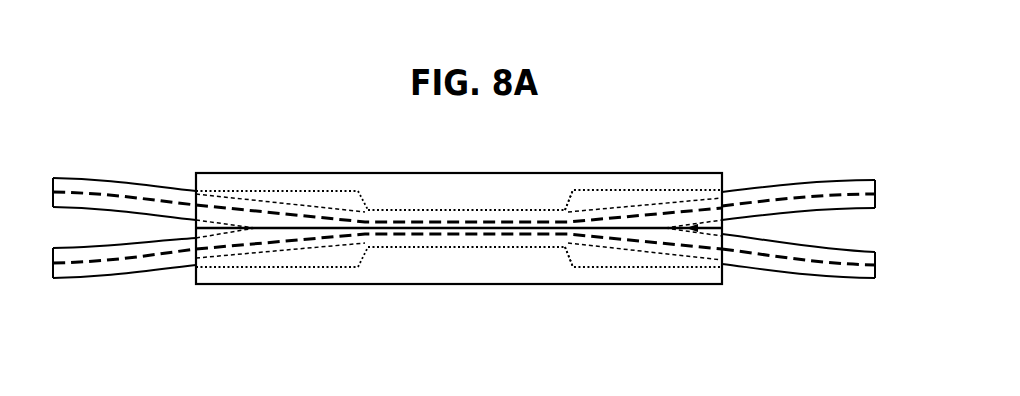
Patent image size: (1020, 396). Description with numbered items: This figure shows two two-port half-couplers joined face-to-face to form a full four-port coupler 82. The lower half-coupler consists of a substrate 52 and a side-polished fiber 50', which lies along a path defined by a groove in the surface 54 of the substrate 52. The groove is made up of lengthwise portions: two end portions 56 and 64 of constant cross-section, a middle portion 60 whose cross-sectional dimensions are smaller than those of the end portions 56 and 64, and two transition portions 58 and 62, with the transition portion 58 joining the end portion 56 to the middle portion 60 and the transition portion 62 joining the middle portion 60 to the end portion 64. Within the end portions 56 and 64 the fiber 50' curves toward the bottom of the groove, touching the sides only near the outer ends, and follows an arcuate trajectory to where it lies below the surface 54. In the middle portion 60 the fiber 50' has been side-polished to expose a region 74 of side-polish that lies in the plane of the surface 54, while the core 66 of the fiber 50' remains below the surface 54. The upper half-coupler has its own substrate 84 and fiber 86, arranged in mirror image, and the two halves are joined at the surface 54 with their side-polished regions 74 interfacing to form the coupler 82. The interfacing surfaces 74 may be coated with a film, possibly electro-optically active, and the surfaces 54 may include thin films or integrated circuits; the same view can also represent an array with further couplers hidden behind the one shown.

The full 4-port coupler 82 is at (345, 153).
The substrate 52 is at (533, 264).
The surface 54 is at (210, 229).
The end portion of groove 56 is at (273, 266).
The transition portion of groove 58 is at (359, 257).
The middle portion of groove 60 is at (437, 249).
The region of side-polish 74 is at (473, 226).
The substrate 84 is at (553, 186).
The end portion of groove 64 is at (637, 266).
The transition portion of groove 62 is at (568, 254).
The fiber 86 is at (825, 181).
The fiber after side-polishing 50' is at (798, 292).
The core 66 is at (828, 264).